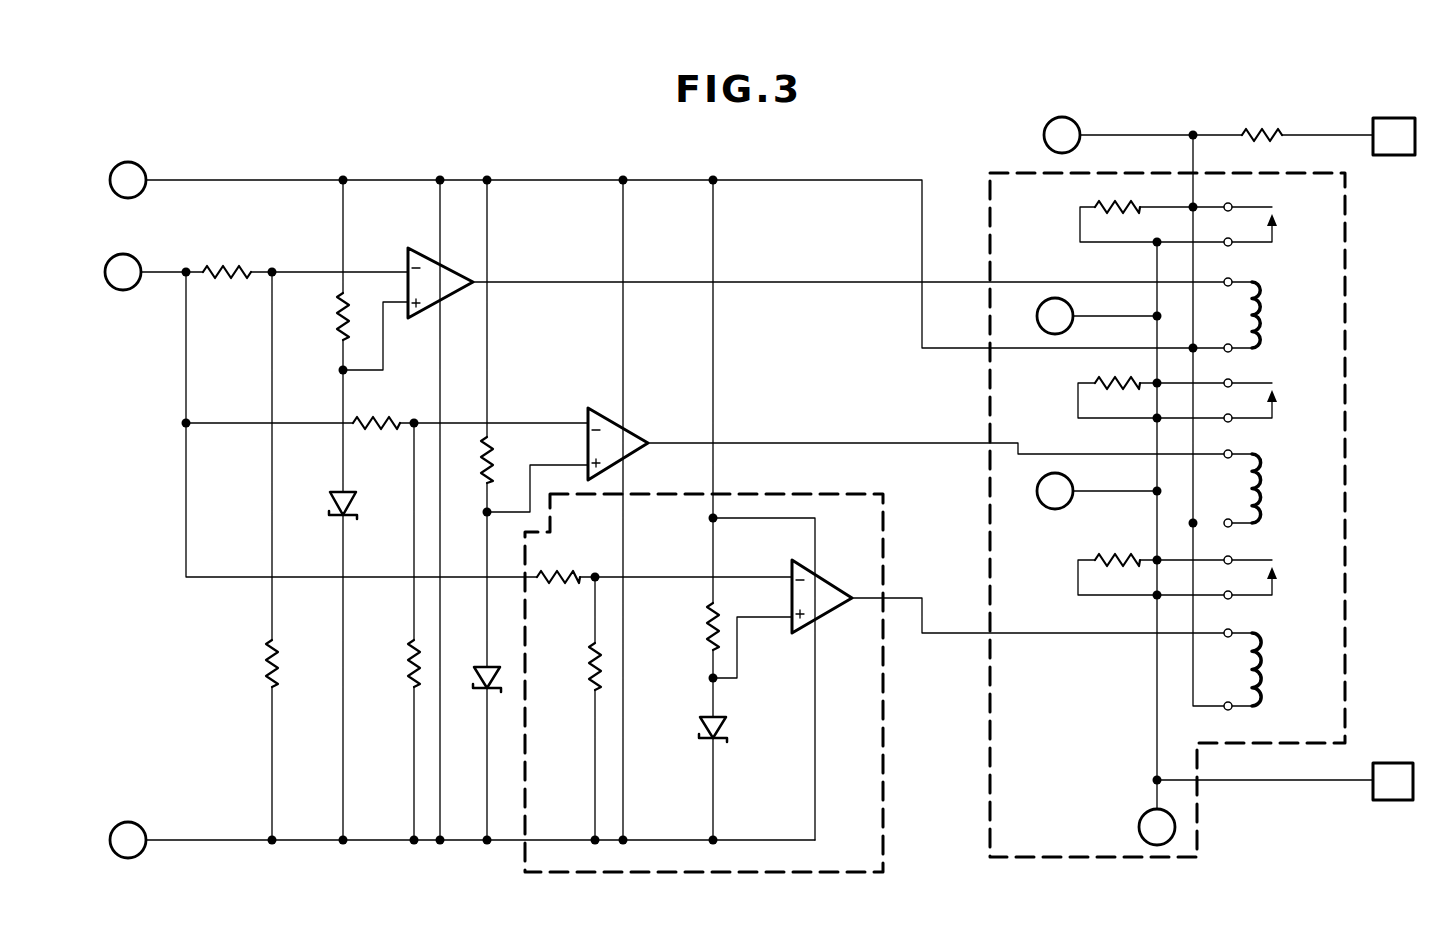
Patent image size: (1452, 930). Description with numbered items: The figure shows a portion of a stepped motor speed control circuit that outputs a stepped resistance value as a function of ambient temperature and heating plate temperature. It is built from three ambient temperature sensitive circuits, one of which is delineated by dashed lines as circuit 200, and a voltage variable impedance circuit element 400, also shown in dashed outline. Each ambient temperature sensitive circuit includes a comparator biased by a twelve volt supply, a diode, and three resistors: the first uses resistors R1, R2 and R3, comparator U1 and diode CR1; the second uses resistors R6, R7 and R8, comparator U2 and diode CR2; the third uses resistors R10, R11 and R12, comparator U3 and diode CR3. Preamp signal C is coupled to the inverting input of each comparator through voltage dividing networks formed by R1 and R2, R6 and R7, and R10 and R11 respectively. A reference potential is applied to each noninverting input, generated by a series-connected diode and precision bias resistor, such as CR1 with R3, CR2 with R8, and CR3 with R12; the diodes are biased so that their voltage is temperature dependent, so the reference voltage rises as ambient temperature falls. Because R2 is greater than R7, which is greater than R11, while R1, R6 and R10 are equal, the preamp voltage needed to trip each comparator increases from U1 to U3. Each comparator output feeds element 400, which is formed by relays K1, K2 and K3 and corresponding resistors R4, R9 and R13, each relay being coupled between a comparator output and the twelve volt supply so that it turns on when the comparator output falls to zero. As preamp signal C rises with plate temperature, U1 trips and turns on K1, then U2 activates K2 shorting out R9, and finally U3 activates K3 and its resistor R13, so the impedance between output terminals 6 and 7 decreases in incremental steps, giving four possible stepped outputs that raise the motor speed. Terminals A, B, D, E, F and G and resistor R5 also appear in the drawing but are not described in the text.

The 12V return terminal A is at (431, 826).
The +12V DC terminal B is at (652, 240).
The preamp signal C is at (136, 255).
The terminal D is at (1143, 162).
The terminal E is at (1097, 316).
The terminal F is at (1097, 491).
The terminal G is at (1256, 543).
The output terminal 6 is at (1359, 107).
The output terminal 7 is at (1370, 815).
The resistor R1 is at (305, 255).
The resistor R2 is at (266, 666).
The precision bias resistor R3 is at (336, 320).
The resistor R4 is at (1140, 204).
The resistor R5 is at (1261, 128).
The resistor R6 is at (376, 408).
The resistor R7 is at (408, 666).
The precision bias resistor R8 is at (482, 458).
The resistor R9 is at (1140, 380).
The resistor R10 is at (560, 561).
The resistor R11 is at (590, 668).
The precision bias resistor R12 is at (707, 628).
The resistor R13 is at (1140, 556).
The diode CR1 is at (328, 500).
The diode CR2 is at (476, 676).
The diode CR3 is at (700, 728).
The comparator U1 is at (439, 282).
The comparator U2 is at (617, 439).
The comparator U3 is at (821, 595).
The relay K1 is at (1270, 321).
The relay K2 is at (1270, 495).
The relay K3 is at (1270, 675).
The ambient temperature sensitive circuit 200 is at (885, 678).
The voltage variable impedance circuit element 400 is at (1030, 859).